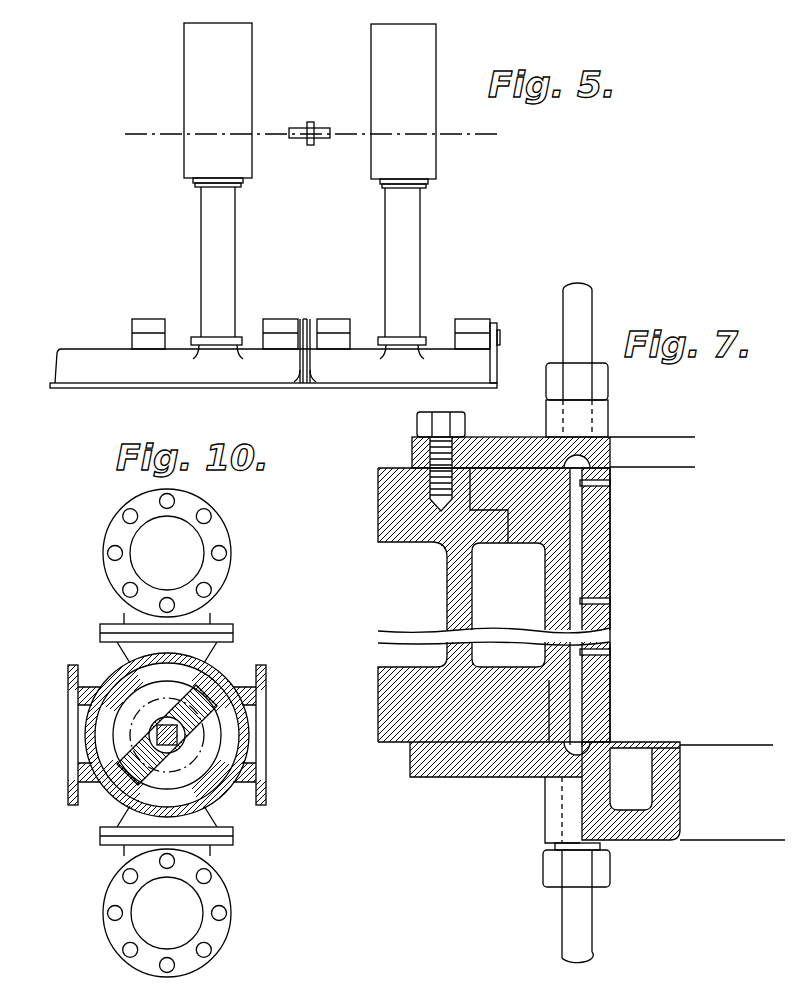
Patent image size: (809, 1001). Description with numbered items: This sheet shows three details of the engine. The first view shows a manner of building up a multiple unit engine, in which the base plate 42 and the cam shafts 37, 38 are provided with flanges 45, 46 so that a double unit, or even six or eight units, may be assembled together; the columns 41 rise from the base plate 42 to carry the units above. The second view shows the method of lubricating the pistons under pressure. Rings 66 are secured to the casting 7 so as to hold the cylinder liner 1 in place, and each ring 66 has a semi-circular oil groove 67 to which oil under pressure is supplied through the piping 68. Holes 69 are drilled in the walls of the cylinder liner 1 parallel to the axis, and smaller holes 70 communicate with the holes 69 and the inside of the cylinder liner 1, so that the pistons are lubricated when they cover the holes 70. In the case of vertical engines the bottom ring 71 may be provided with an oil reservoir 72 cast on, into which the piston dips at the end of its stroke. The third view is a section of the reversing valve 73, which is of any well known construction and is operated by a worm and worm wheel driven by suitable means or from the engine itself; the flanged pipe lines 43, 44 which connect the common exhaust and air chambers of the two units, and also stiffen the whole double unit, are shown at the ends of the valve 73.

In FIG. 7, the cylinder liner 1 is at (598, 560).
In FIG. 5, the casting 7 is at (310, 105).
In FIG. 7, the casting 7 is at (378, 497).
In FIG. 5, the cam shaft 37 is at (298, 128).
In FIG. 5, the cam shaft 38 is at (320, 131).
In FIG. 5, the column 41 is at (201, 260).
In FIG. 5, the base plate 42 is at (275, 353).
In FIG. 10, the pipe line 43 is at (186, 558).
In FIG. 10, the pipe line 44 is at (185, 926).
In FIG. 5, the flange 45 is at (309, 383).
In FIG. 5, the flange 46 is at (309, 319).
In FIG. 7, the ring 66 is at (647, 448).
In FIG. 7, the semi-circular oil groove 67 is at (608, 432).
In FIG. 7, the piping 68 is at (580, 305).
In FIG. 7, the hole 69 is at (578, 585).
In FIG. 7, the smaller hole 70 is at (612, 484).
In FIG. 7, the bottom ring 71 is at (450, 768).
In FIG. 7, the oil reservoir 72 is at (632, 805).
In FIG. 10, the reversing valve 73 is at (120, 730).